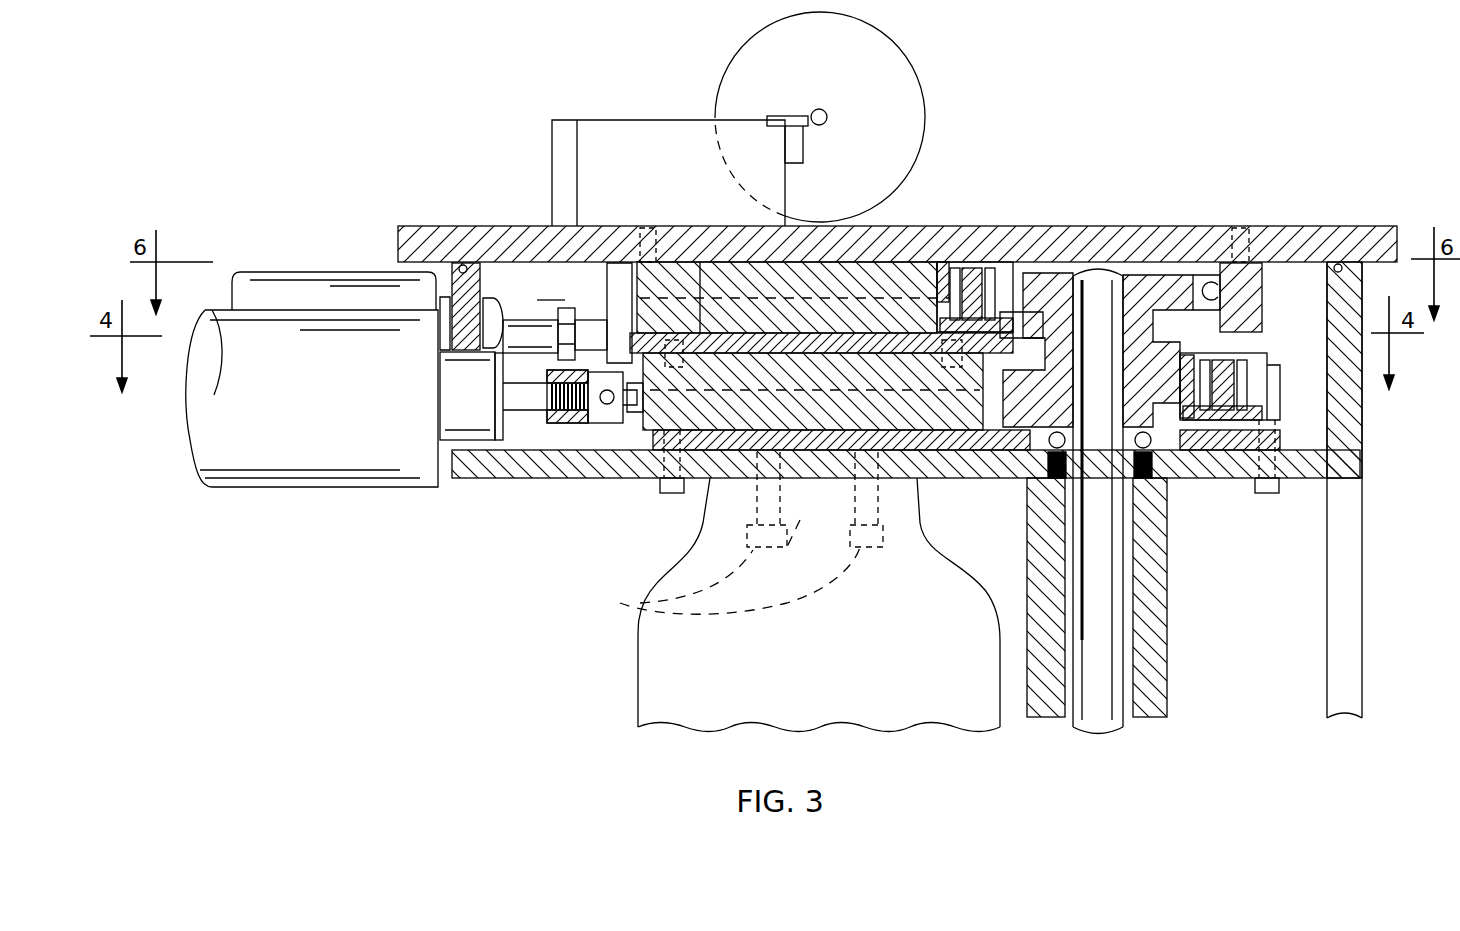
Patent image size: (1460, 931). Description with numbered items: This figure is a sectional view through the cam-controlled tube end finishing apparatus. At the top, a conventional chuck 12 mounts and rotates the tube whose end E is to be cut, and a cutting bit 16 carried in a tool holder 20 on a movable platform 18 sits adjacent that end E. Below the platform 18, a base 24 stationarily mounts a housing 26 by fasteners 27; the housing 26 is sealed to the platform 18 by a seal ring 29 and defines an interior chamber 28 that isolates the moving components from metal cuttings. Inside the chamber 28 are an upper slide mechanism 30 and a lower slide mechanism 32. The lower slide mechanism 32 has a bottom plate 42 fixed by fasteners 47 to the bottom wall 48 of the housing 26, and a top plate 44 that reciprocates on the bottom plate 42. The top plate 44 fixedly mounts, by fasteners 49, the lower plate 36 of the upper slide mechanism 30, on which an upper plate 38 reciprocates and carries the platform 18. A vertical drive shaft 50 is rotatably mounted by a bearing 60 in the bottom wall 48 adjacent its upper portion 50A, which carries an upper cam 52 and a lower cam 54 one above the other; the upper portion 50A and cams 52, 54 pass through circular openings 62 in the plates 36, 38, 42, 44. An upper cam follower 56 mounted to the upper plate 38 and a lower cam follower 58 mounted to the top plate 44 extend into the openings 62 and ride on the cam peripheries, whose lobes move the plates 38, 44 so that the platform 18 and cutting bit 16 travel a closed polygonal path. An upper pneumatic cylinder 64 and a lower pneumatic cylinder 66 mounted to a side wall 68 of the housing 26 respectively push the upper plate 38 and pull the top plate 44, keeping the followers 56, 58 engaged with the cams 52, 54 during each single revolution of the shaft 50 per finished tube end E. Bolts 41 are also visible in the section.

The chuck 12 is at (925, 96).
The cutting bit 16 is at (793, 130).
The end of the tube E is at (823, 109).
The movable platform 18 is at (1105, 222).
The tool holder 20 is at (665, 120).
The base 24 is at (638, 673).
The housing 26 is at (553, 485).
The fasteners 27 is at (645, 603).
The interior chamber 28 is at (557, 313).
The seal ring 29 is at (465, 262).
The upper slide mechanism 30 is at (693, 255).
The lower slide mechanism 32 is at (708, 482).
The lower plate 36 is at (890, 330).
The upper plate 38 is at (740, 272).
The bolt 41 is at (648, 245).
The bottom plate 42 is at (823, 440).
The top plate 44 is at (905, 545).
The fasteners 47 is at (684, 360).
The bottom wall 48 is at (602, 472).
The fasteners 49 is at (665, 480).
The drive shaft 50 is at (1117, 663).
The upper portion of the shaft 50A is at (1182, 262).
The upper cam 52 is at (1212, 285).
The lower cam 54 is at (1165, 395).
The upper cam follower 56 is at (1025, 275).
The lower cam follower 58 is at (1267, 381).
The bearing 60 is at (1025, 478).
The circular openings 62 is at (1255, 310).
The upper pneumatic cylinder 64 is at (362, 268).
The lower pneumatic cylinder 66 is at (342, 490).
The side wall 68 is at (462, 452).